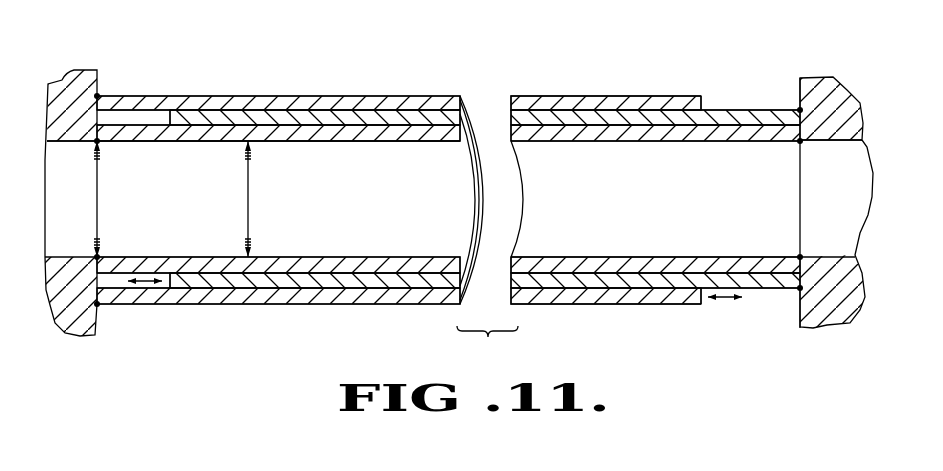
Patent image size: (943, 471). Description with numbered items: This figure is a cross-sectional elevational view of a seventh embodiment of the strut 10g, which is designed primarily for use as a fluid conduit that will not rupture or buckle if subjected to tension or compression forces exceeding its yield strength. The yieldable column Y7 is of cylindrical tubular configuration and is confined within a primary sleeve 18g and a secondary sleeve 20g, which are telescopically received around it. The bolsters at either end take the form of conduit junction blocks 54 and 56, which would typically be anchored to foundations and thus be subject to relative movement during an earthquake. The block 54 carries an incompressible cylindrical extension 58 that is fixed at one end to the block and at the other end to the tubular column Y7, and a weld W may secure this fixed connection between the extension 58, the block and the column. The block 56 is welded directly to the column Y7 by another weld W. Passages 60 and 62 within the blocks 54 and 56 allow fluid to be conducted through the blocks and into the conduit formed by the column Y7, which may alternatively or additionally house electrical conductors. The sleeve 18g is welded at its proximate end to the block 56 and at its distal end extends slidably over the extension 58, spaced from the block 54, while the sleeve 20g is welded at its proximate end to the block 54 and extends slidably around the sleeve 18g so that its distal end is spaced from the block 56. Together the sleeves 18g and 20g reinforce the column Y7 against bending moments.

The strut 10g is at (448, 179).
The secondary sleeve 20g is at (598, 102).
The primary sleeve 18g is at (727, 118).
The cylindrical extension 58 is at (197, 260).
The conduit junction block 54 is at (76, 337).
The conduit junction block 56 is at (825, 328).
The passage 60 is at (69, 143).
The passage 62 is at (823, 142).
The weld W is at (98, 256).
The yieldable column Y7 is at (357, 141).